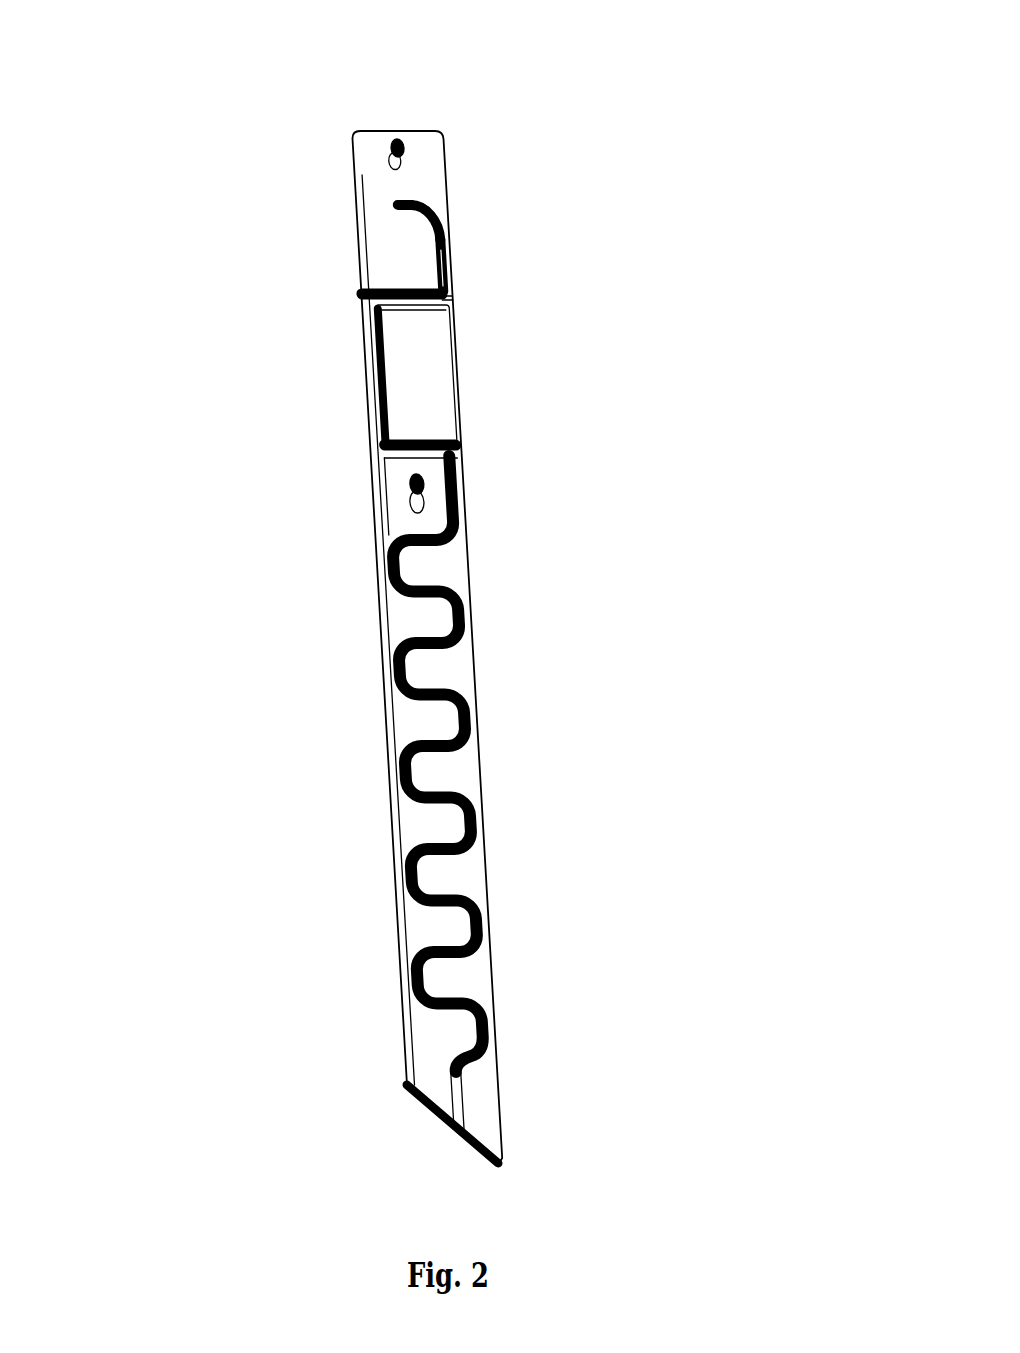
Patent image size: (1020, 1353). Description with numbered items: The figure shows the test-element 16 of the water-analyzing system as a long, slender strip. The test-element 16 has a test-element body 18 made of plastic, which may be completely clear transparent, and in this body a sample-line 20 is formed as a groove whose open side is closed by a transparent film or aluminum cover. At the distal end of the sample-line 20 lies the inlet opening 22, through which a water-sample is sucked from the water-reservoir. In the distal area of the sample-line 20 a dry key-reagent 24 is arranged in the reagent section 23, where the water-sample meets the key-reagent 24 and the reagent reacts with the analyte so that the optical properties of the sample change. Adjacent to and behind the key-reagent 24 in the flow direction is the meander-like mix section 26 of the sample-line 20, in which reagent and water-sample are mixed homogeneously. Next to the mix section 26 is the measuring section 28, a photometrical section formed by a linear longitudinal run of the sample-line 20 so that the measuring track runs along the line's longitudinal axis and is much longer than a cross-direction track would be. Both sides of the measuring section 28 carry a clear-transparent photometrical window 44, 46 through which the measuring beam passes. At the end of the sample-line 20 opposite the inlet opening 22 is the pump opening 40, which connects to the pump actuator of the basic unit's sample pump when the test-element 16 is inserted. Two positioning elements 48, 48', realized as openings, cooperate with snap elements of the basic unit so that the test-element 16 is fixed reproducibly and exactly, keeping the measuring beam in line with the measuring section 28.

The test-element 16 is at (318, 391).
The test-element body 18 is at (433, 403).
The sample-line 20 is at (402, 621).
The inlet opening 22 is at (460, 1128).
The reagent section 23 is at (409, 224).
The key-reagent 24 is at (435, 257).
The mix section 26 is at (487, 537).
The measuring section 28 is at (413, 325).
The pump opening 40 is at (408, 202).
The photometrical window 44 is at (362, 293).
The photometrical window 46 is at (450, 293).
The positioning element 48 is at (570, 85).
The positioning element 48' is at (570, 457).